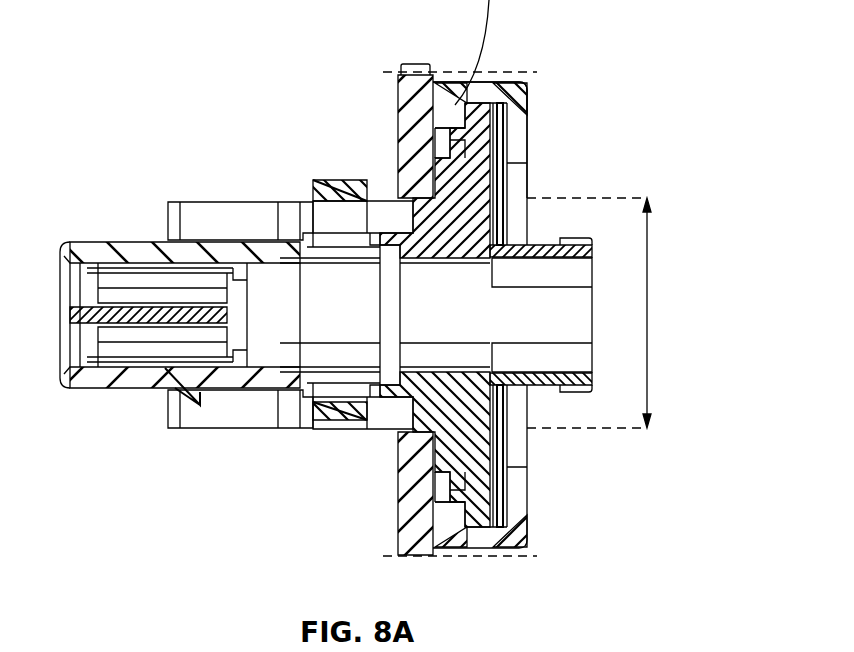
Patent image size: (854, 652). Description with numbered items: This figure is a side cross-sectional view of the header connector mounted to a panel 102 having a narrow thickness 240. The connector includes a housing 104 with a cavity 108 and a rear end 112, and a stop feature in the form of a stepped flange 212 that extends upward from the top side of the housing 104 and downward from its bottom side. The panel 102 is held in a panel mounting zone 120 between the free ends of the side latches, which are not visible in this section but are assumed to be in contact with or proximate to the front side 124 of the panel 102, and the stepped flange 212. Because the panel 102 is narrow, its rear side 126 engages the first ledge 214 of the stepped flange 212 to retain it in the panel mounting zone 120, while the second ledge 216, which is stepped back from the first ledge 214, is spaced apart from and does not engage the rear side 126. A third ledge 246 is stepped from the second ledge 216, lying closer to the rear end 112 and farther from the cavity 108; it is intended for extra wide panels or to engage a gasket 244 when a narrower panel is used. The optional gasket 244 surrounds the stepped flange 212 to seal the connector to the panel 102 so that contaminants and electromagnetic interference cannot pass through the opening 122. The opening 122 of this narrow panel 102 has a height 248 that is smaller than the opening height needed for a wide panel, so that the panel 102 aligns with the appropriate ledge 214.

The panel 102 is at (412, 108).
The housing 104 is at (152, 250).
The cavity 108 is at (430, 337).
The rear end 112 is at (593, 298).
The panel mounting zone 120 is at (393, 198).
The opening 122 is at (390, 435).
The front side 124 is at (398, 150).
The rear side 126 is at (430, 510).
The stepped flange 212 is at (490, 83).
The first ledge 214 is at (437, 188).
The second ledge 216 is at (450, 136).
The narrow thickness 240 is at (413, 63).
The gasket 244 is at (455, 92).
The third ledge 246 is at (507, 104).
The height 248 is at (647, 313).